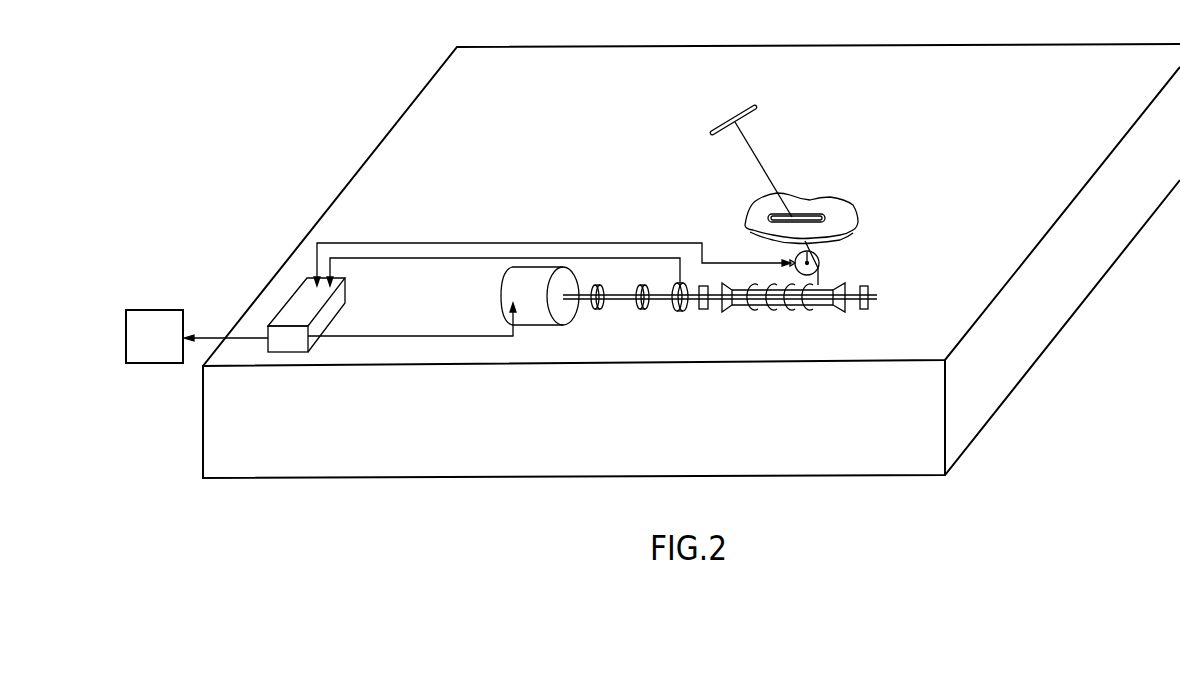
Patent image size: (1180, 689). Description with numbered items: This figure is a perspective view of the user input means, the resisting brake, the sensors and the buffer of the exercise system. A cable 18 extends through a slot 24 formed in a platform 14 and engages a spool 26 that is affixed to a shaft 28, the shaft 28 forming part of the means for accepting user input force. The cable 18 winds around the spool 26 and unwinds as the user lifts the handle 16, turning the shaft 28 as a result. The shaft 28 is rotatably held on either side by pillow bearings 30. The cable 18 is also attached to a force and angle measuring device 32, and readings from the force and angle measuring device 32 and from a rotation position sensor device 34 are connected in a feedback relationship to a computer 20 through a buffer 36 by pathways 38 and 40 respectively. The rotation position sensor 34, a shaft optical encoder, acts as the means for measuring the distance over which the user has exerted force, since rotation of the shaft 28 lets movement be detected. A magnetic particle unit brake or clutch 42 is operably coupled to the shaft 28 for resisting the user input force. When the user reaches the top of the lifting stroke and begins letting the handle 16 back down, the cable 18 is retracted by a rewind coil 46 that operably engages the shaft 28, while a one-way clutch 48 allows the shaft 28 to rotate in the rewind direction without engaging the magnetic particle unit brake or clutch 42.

The platform 14 is at (850, 218).
The handle 16 is at (757, 113).
The cable 18 is at (767, 172).
The computer 20 is at (186, 295).
The slot 24 is at (822, 211).
The spool 26 is at (834, 309).
The shaft 28 is at (587, 303).
The pillow bearings 30 is at (700, 311).
The force and angle measuring device 32 is at (821, 267).
The rotation position sensor device 34 is at (675, 312).
The buffer 36 is at (338, 320).
The pathway 38 is at (462, 243).
The pathway 40 is at (433, 259).
The magnetic particle unit brake or clutch 42 is at (553, 324).
The rewind coil 46 is at (647, 311).
The one-way clutch 48 is at (604, 306).